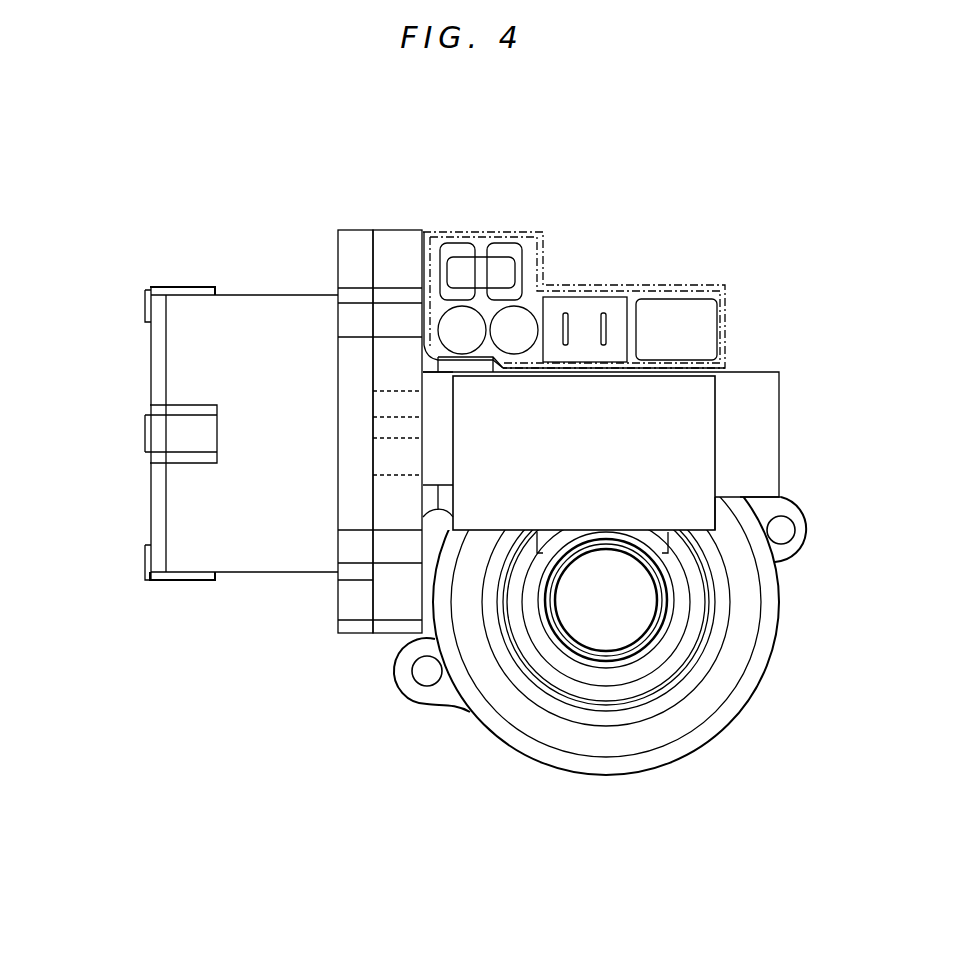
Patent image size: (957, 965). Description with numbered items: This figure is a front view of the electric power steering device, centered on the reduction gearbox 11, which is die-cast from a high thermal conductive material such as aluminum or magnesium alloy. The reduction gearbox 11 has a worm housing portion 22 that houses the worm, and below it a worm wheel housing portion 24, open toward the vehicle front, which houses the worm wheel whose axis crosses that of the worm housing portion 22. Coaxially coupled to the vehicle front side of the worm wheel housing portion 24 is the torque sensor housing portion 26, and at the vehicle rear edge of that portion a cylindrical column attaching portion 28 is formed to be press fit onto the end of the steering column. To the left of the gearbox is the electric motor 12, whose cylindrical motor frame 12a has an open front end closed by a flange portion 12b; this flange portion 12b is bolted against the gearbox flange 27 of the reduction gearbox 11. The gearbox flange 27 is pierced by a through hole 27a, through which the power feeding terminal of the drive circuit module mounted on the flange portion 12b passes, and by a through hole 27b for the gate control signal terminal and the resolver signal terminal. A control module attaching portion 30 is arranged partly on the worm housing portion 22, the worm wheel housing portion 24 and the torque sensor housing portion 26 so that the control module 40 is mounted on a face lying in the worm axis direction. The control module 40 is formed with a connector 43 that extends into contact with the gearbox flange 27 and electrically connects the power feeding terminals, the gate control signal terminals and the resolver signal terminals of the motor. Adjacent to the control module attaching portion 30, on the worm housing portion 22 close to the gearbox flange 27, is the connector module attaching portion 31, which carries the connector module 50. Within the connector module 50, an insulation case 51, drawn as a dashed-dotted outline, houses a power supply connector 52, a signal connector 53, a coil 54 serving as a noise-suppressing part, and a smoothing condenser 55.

The reduction gearbox 11 is at (480, 740).
The electric motor 12 is at (138, 345).
The motor frame 12a is at (238, 555).
The flange portion 12b is at (353, 235).
The worm housing portion 22 is at (768, 393).
The worm wheel housing portion 24 is at (685, 740).
The torque sensor housing portion 26 is at (673, 623).
The gearbox flange 27 is at (397, 237).
The through hole 27a is at (393, 391).
The through hole 27b is at (390, 476).
The column attaching portion 28 is at (657, 640).
The control module attaching portion 30 is at (645, 528).
The connector module attaching portion 31 is at (688, 368).
The control module 40 is at (717, 434).
The connector 43 is at (435, 468).
The connector module 50 is at (550, 243).
The insulation case 51 is at (729, 297).
The power supply connector 52 is at (603, 308).
The signal connector 53 is at (677, 310).
The coil 54 is at (462, 250).
The smoothing condenser 55 is at (463, 328).